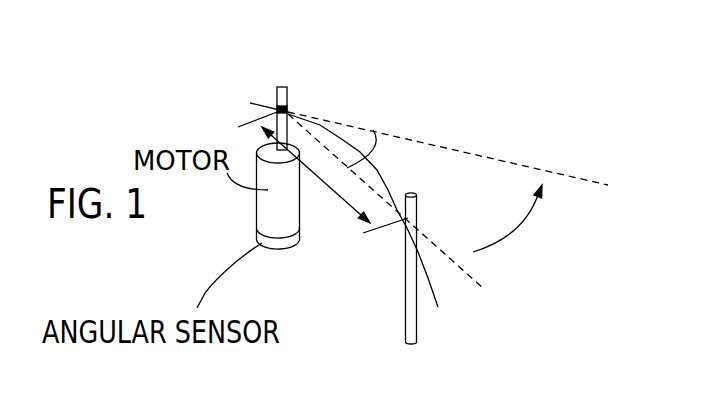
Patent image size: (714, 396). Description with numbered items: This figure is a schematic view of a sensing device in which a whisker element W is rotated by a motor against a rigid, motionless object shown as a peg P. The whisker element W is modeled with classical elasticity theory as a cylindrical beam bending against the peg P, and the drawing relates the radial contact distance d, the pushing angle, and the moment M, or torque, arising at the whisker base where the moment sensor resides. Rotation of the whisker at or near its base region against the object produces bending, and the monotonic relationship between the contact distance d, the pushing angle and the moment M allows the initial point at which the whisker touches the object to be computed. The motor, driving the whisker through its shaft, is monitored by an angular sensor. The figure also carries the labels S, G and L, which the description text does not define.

The rotating shaft S is at (277, 102).
The moment M is at (301, 108).
The incident light beam G is at (277, 108).
The reference line L is at (448, 148).
The radial contact distance d is at (323, 172).
The peg P is at (398, 296).
The whisker element W is at (508, 342).